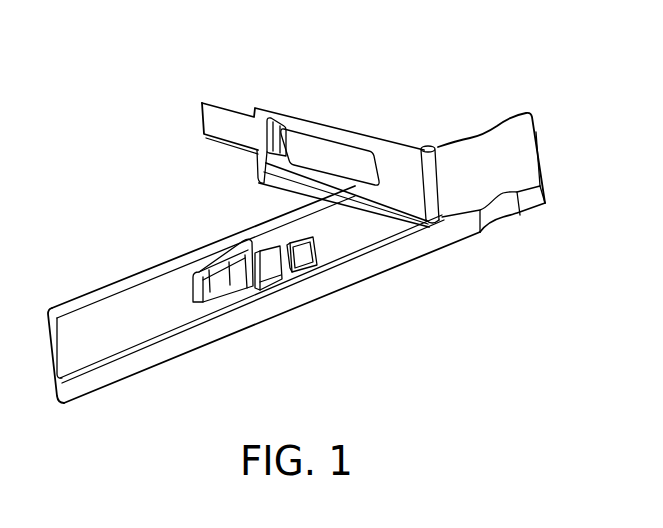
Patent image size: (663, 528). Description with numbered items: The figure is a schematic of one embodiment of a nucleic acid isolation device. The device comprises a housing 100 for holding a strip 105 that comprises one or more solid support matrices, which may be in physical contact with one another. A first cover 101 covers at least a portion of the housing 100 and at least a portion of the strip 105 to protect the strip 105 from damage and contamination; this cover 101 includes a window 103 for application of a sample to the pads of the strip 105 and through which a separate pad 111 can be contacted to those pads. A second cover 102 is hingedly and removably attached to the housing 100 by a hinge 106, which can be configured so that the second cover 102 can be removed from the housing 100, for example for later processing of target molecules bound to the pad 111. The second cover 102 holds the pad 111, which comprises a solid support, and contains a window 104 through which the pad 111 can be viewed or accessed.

The housing 100 is at (380, 265).
The first cover 101 is at (98, 313).
The second cover 102 is at (323, 128).
The window 103 is at (200, 273).
The window 104 is at (274, 122).
The strip 105 is at (292, 258).
The hinge 106 is at (433, 177).
The pad 111 is at (257, 153).